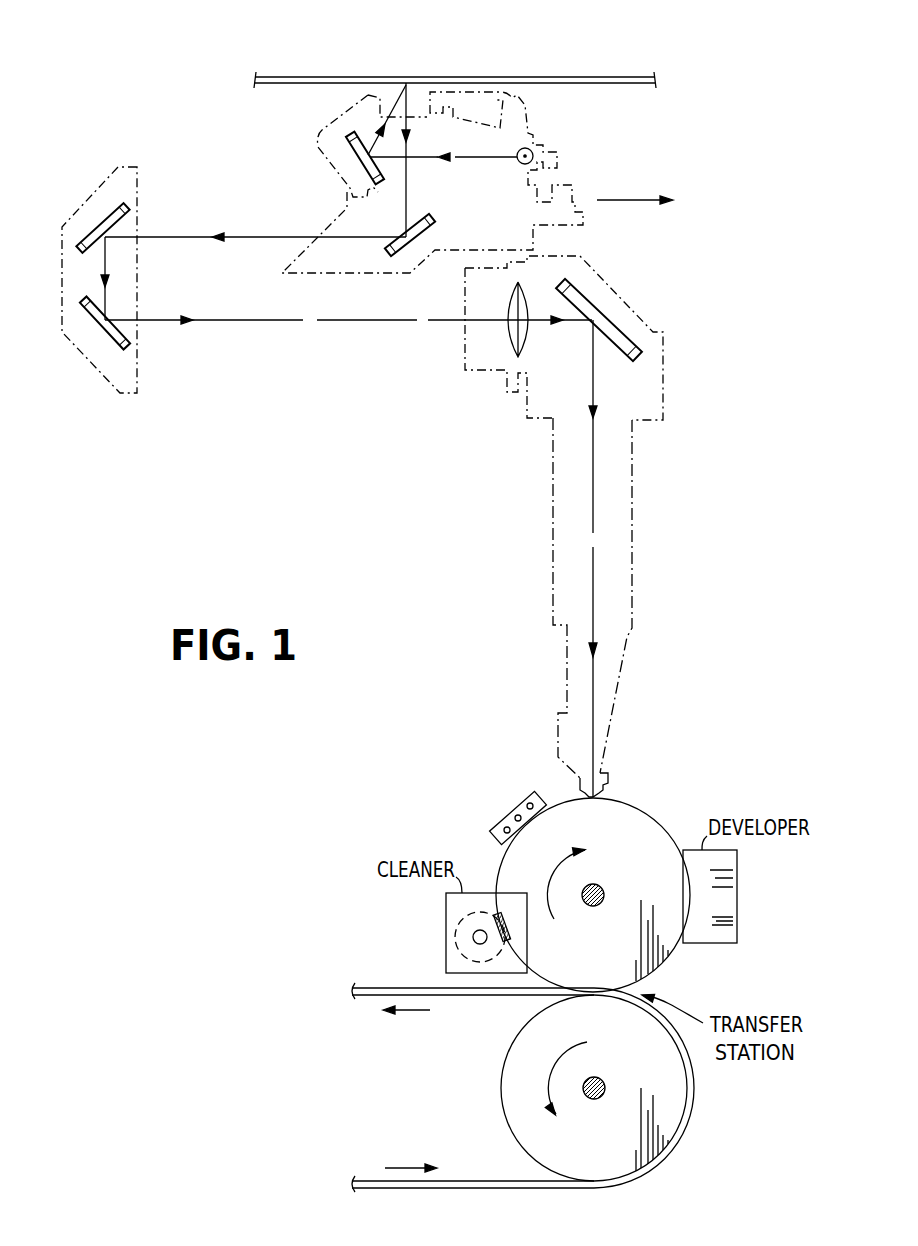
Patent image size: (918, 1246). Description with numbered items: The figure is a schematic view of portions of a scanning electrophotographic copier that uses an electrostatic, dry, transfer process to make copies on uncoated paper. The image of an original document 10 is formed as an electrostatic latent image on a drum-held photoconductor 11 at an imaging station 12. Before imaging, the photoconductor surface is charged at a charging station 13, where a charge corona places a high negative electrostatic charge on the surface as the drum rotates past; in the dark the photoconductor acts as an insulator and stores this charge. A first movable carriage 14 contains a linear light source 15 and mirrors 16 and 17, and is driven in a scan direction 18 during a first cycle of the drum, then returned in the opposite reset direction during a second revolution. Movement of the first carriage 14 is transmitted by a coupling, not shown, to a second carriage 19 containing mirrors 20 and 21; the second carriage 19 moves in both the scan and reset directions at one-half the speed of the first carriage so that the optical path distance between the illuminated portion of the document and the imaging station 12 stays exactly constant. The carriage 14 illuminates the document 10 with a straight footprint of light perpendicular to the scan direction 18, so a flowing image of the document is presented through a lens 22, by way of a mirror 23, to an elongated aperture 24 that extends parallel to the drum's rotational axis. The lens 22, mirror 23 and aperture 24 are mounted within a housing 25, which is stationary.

The original document 10 is at (610, 77).
The drum-held photoconductor 11 is at (665, 962).
The imaging station 12 is at (627, 791).
The charging station 13 is at (503, 817).
The first movable carriage 14 is at (312, 125).
The linear light source 15 is at (531, 144).
The mirror 16 is at (366, 156).
The mirror 17 is at (412, 247).
The scan direction 18 is at (627, 200).
The second carriage 19 is at (97, 398).
The mirror 20 is at (93, 235).
The mirror 21 is at (88, 318).
The lens 22 is at (509, 333).
The mirror 23 is at (616, 327).
The aperture 24 is at (598, 770).
The housing 25 is at (553, 518).